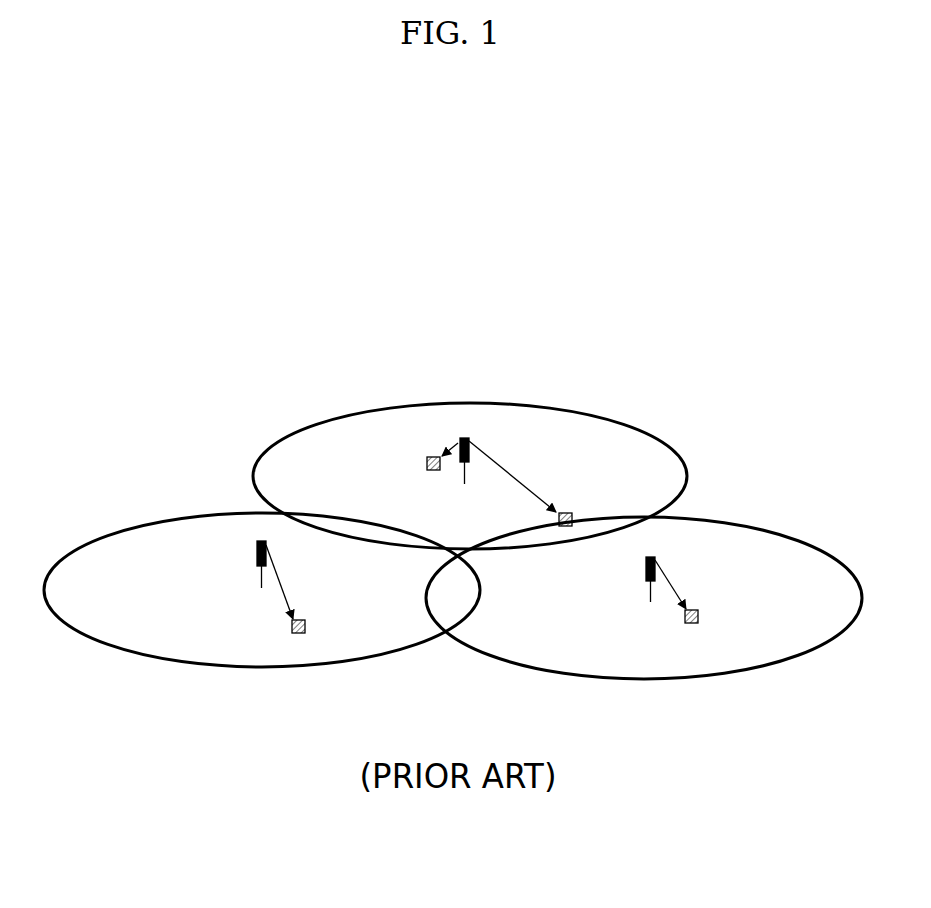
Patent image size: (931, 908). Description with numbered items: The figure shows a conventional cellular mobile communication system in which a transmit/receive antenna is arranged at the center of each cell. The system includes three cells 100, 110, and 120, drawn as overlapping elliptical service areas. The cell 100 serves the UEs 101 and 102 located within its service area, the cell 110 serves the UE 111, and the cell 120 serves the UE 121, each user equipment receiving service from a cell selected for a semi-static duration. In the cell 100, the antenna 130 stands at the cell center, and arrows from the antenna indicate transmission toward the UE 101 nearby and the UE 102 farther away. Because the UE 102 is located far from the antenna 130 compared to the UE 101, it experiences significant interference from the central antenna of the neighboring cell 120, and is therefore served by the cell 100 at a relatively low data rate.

The cell 100 is at (322, 418).
The UE 101 is at (428, 457).
The UE 102 is at (572, 513).
The cell 110 is at (148, 520).
The UE 111 is at (305, 620).
The cell 120 is at (762, 530).
The UE 121 is at (698, 610).
The antenna 130 is at (462, 437).